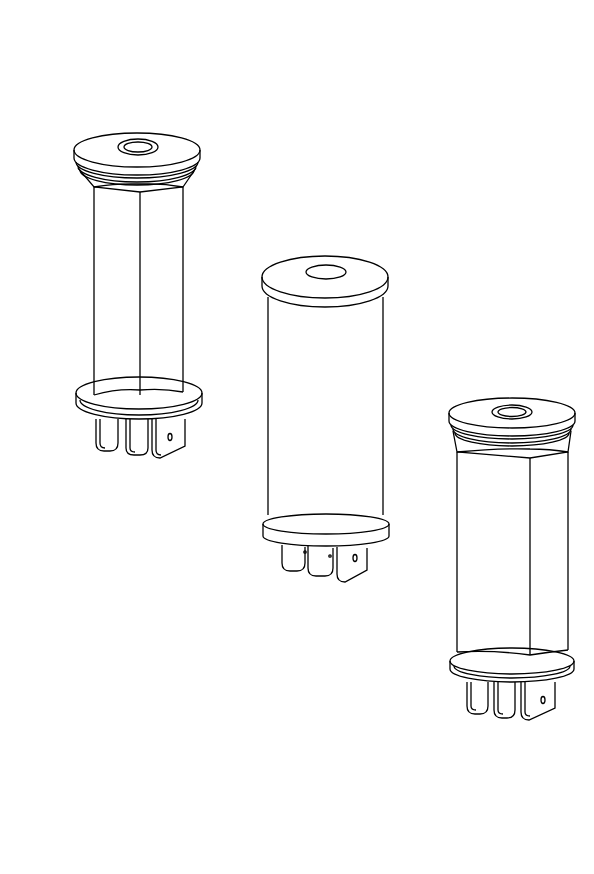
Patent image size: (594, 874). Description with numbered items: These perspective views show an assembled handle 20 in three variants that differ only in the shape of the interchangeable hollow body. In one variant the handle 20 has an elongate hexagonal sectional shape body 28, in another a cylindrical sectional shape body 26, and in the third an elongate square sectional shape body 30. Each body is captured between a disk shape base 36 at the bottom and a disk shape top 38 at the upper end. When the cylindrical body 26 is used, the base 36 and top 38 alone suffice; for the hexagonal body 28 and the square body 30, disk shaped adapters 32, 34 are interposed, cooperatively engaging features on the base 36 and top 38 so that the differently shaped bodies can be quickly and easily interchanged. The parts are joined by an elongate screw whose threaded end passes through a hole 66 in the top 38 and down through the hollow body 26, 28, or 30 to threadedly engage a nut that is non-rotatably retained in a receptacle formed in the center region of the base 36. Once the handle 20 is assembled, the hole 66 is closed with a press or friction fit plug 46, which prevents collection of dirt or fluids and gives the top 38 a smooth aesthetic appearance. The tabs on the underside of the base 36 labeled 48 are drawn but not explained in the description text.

In FIG. 6, the handle 20 is at (167, 95).
In FIG. 7, the handle 20 is at (329, 228).
In FIG. 8, the handle 20 is at (507, 340).
In FIG. 7, the cylindrical tubular body 26 is at (386, 368).
In FIG. 6, the hexagonal shape body 28 is at (186, 268).
In FIG. 8, the tubular square body 30 is at (454, 577).
In FIG. 6, the disk shaped adapter 32 is at (190, 180).
In FIG. 8, the disk shaped adapter 34 is at (456, 452).
In FIG. 6, the base 36 is at (97, 441).
In FIG. 7, the base 36 is at (263, 538).
In FIG. 8, the base 36 is at (468, 711).
In FIG. 6, the top 38 is at (189, 138).
In FIG. 7, the top 38 is at (366, 258).
In FIG. 8, the top 38 is at (539, 399).
In FIG. 6, the plug 46 is at (142, 149).
In FIG. 6, the tab 48 is at (152, 453).
In FIG. 7, the tab 48 is at (348, 570).
In FIG. 6, the hole 66 is at (120, 143).